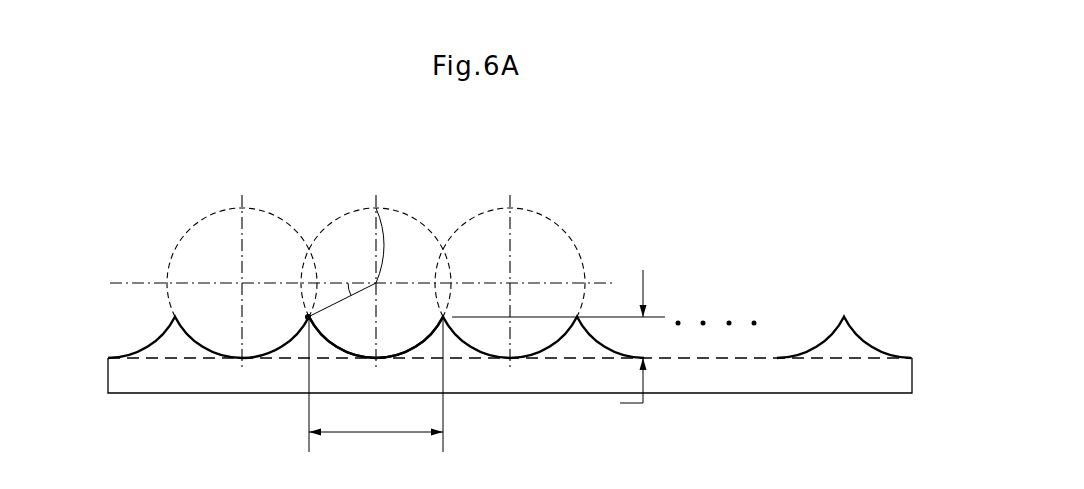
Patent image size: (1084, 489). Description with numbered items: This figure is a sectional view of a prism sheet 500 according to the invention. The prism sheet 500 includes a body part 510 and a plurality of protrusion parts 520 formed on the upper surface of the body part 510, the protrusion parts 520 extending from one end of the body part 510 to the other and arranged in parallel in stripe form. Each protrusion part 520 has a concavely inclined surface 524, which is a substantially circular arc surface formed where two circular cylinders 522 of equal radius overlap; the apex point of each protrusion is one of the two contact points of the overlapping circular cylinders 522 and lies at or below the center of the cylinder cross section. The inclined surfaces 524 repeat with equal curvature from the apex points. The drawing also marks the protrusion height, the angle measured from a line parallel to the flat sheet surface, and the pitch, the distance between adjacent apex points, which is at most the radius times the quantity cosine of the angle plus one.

The prism sheet 500 is at (510, 289).
The body part 510 is at (130, 378).
The protrusion parts 520 is at (297, 348).
The circular cylinders 522 is at (272, 212).
The inclined surface 524 is at (337, 344).